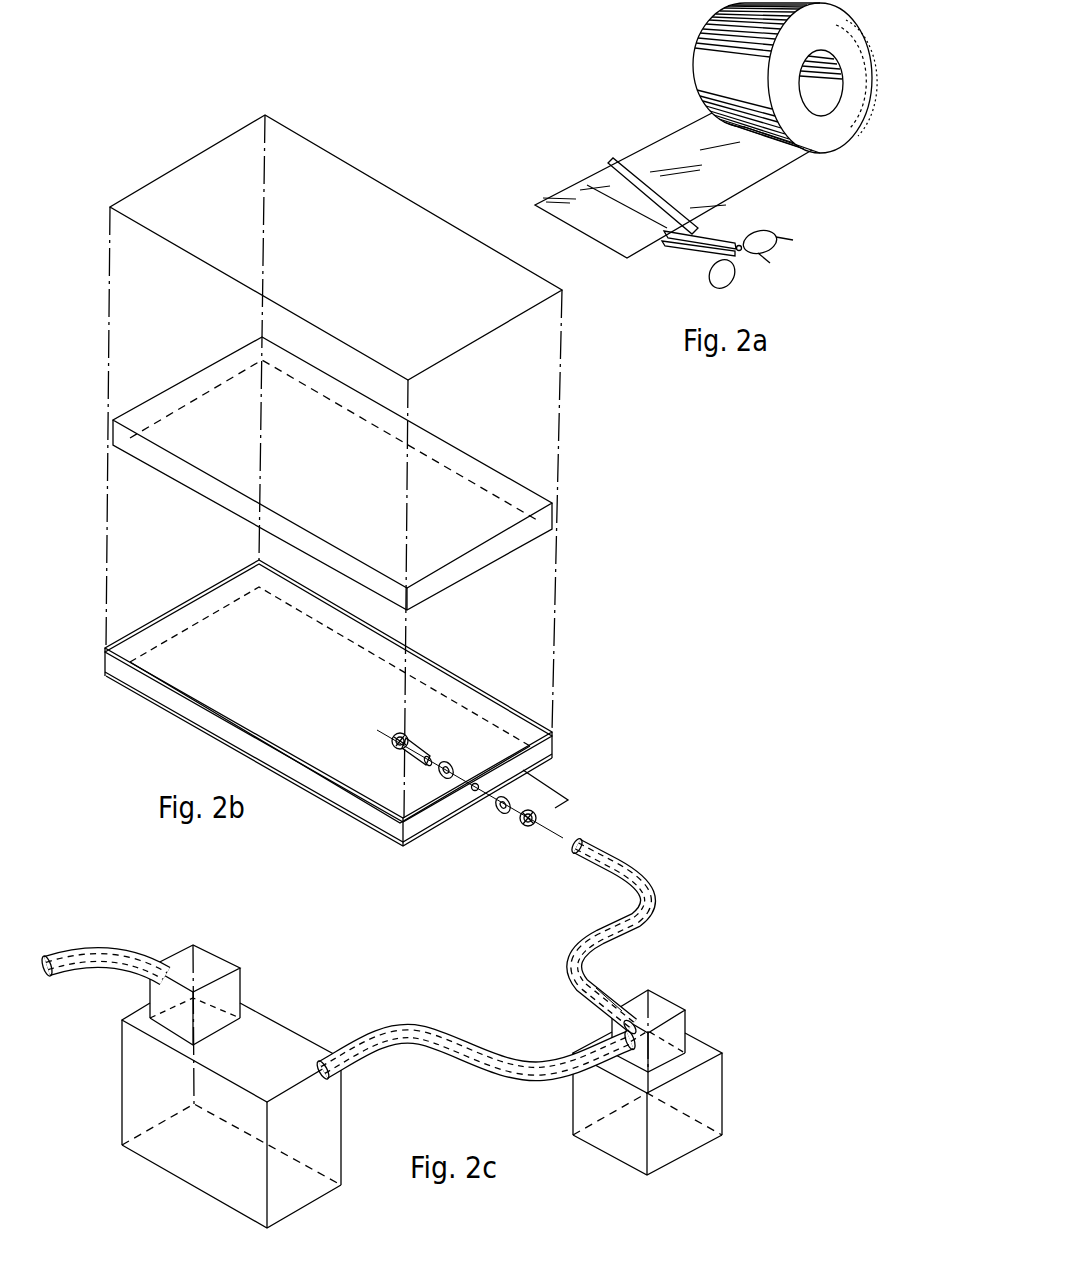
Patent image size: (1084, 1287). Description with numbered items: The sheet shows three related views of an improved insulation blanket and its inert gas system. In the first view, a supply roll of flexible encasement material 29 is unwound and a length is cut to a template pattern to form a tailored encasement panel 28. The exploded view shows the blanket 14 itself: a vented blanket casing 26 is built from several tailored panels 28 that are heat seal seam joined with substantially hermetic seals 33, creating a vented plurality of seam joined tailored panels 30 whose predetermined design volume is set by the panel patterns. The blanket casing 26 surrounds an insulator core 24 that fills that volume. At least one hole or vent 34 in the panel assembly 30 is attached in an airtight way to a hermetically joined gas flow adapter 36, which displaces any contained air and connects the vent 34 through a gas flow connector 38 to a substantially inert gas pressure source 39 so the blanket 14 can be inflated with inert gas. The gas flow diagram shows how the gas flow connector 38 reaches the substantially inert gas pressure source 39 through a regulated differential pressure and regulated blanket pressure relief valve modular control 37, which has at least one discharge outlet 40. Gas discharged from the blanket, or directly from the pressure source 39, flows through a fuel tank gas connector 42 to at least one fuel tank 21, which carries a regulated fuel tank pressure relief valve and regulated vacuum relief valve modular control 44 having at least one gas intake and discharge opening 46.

In FIG. 2B, the blanket 14 is at (60, 207).
In FIG. 2B, the vented blanket casing 26 is at (336, 469).
In FIG. 2B, the insulator core 24 is at (332, 473).
In FIG. 2B, the vented plurality of seam joined tailored panels 30 is at (348, 800).
In FIG. 2B, the substantially hermetic seals 33 is at (138, 700).
In FIG. 2B, the hermetically joined gas flow adapter 36 is at (490, 761).
In FIG. 2B, the vent 34 is at (475, 788).
In FIG. 2A, the flexible encasement material 29 is at (706, 130).
In FIG. 2A, the tailored encasement panel 28 is at (700, 226).
In FIG. 2C, the fuel tank 21 is at (230, 1155).
In FIG. 2C, the regulated fuel tank pressure relief valve and regulated vacuum relief valve modu 44 is at (212, 953).
In FIG. 2C, the gas intake and discharge opening 46 is at (47, 957).
In FIG. 2C, the fuel tank gas connector 42 is at (426, 1025).
In FIG. 2C, the discharge outlet 40 is at (611, 1033).
In FIG. 2C, the gas flow connector 38 is at (650, 888).
In FIG. 2C, the regulated differential pressure and regulated blanket pressure relief valve modu 37 is at (675, 1005).
In FIG. 2C, the substantially inert gas pressure source 39 is at (723, 1092).